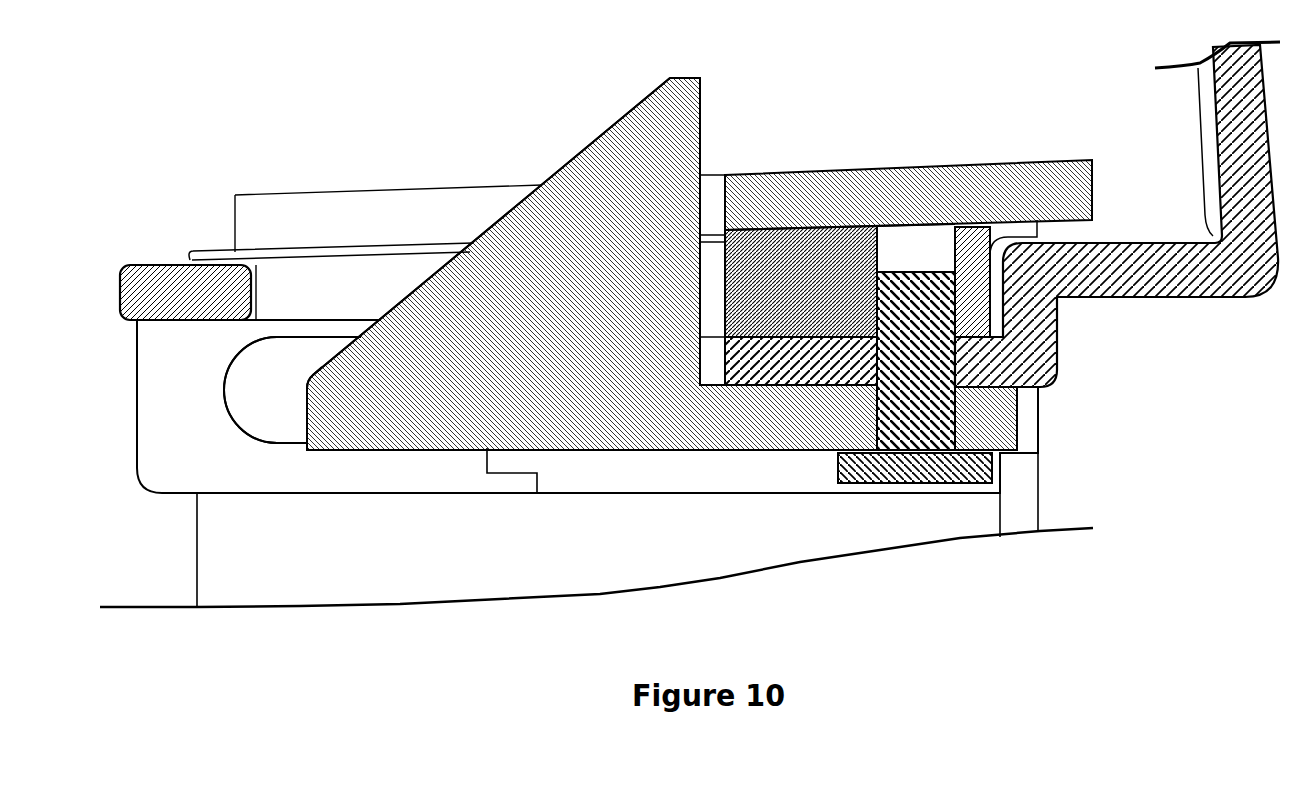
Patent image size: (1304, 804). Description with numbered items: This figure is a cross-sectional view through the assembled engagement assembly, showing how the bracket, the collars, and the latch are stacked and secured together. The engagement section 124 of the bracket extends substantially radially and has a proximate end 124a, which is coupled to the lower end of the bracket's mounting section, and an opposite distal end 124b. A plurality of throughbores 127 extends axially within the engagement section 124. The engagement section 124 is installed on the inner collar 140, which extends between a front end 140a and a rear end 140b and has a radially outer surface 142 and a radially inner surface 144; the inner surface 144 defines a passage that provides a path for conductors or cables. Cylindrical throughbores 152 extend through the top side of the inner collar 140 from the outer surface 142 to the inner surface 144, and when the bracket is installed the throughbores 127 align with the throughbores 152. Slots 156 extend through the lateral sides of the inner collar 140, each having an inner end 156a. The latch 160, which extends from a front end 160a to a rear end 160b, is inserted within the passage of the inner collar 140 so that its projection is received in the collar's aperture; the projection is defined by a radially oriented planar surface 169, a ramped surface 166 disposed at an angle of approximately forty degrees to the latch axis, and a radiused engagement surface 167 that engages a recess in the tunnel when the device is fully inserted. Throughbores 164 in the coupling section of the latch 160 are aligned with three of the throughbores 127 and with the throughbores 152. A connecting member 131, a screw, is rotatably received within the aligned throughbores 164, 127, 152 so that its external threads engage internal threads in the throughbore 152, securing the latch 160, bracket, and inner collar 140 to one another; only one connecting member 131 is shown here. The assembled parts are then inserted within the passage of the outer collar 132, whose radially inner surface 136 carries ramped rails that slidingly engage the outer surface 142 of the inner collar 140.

The engagement section 124 is at (1134, 304).
The proximate end 124a is at (1207, 216).
The distal end 124b is at (716, 363).
The throughbores 127 is at (869, 372).
The connecting member 131 is at (903, 485).
The collar 132 is at (963, 160).
The radially inner surface 136 is at (1067, 226).
The inner collar 140 is at (271, 240).
The front end 140a is at (119, 298).
The rear end 140b is at (999, 224).
The radially outer surface 142 is at (767, 230).
The radially inner surface 144 is at (973, 338).
The throughbores 152 is at (882, 234).
The slots 156 is at (234, 423).
The inner end 156a is at (224, 386).
The latch 160 is at (711, 95).
The front end 160a is at (306, 431).
The rear end 160b is at (1021, 434).
The throughbores 164 is at (1007, 457).
The ramped surface 166 is at (564, 167).
The engagement surface 167 is at (303, 377).
The planar surface 169 is at (700, 160).